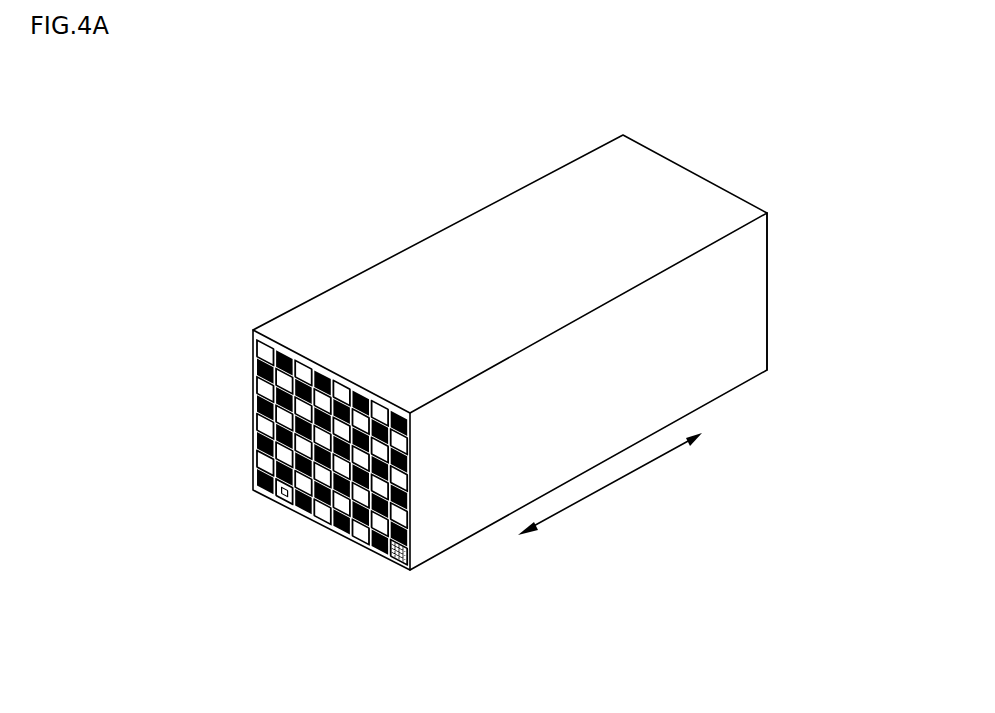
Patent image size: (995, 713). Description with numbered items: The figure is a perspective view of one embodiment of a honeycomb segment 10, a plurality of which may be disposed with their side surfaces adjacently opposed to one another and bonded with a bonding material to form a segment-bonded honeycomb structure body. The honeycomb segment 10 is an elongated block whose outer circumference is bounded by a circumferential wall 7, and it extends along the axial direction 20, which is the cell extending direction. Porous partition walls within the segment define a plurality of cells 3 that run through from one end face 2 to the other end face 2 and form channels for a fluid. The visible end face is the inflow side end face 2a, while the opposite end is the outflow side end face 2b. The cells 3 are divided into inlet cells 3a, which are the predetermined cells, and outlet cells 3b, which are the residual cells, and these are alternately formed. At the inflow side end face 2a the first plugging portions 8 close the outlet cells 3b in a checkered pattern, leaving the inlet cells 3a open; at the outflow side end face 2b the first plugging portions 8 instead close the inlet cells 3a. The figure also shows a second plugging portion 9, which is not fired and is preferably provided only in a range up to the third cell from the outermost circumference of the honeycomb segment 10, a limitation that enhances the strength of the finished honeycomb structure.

The honeycomb segment 10 is at (553, 370).
The circumferential wall 7 is at (400, 278).
The end face 2 is at (570, 442).
The inflow side end face 2a is at (348, 537).
The outflow side end face 2b is at (767, 333).
The cells 3 is at (312, 480).
The inlet cells 3a is at (283, 492).
The outlet cells 3b is at (316, 480).
The first plugging portions 8 is at (302, 510).
The second plugging portions 9 is at (395, 562).
The axial direction 20 is at (615, 480).